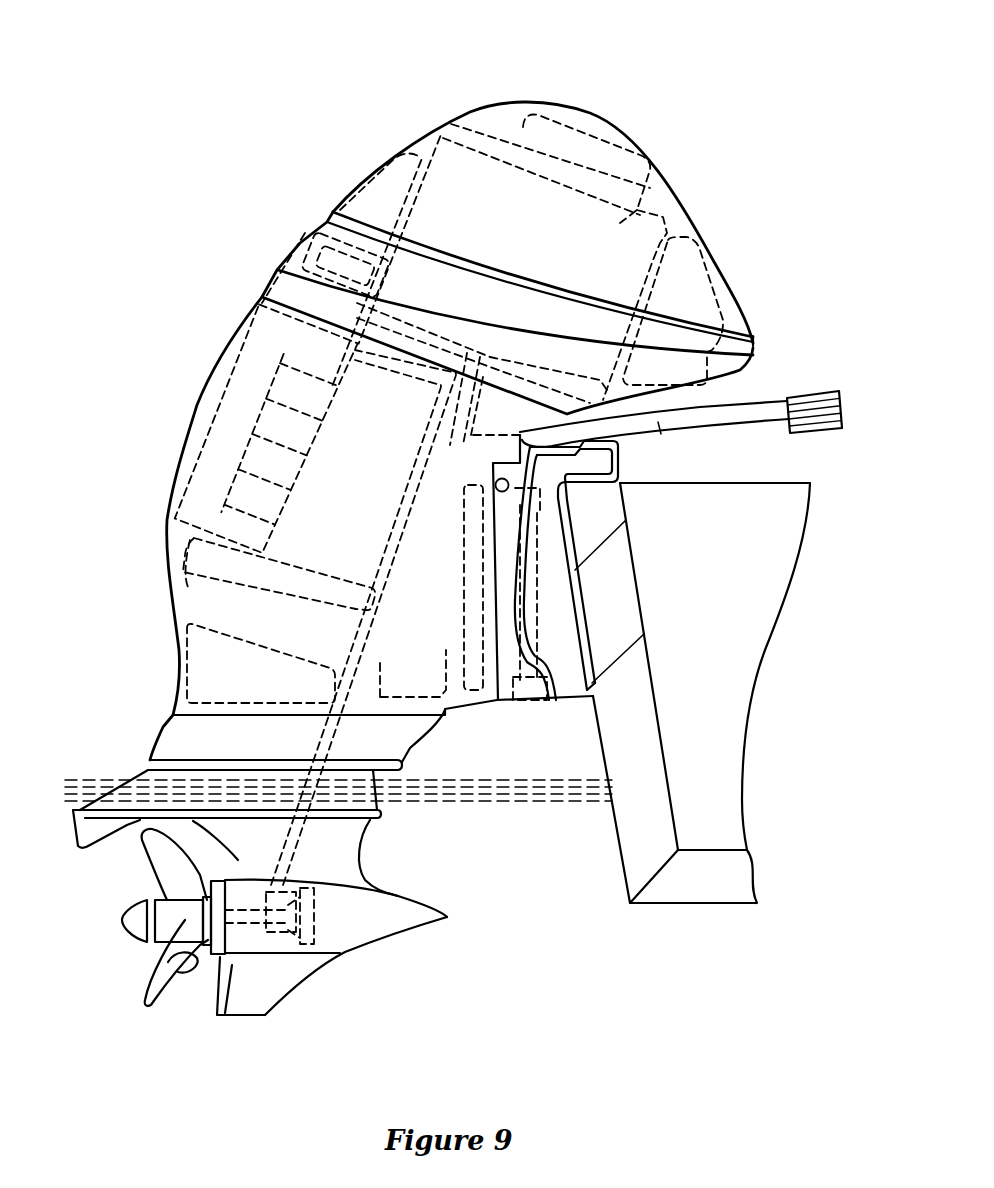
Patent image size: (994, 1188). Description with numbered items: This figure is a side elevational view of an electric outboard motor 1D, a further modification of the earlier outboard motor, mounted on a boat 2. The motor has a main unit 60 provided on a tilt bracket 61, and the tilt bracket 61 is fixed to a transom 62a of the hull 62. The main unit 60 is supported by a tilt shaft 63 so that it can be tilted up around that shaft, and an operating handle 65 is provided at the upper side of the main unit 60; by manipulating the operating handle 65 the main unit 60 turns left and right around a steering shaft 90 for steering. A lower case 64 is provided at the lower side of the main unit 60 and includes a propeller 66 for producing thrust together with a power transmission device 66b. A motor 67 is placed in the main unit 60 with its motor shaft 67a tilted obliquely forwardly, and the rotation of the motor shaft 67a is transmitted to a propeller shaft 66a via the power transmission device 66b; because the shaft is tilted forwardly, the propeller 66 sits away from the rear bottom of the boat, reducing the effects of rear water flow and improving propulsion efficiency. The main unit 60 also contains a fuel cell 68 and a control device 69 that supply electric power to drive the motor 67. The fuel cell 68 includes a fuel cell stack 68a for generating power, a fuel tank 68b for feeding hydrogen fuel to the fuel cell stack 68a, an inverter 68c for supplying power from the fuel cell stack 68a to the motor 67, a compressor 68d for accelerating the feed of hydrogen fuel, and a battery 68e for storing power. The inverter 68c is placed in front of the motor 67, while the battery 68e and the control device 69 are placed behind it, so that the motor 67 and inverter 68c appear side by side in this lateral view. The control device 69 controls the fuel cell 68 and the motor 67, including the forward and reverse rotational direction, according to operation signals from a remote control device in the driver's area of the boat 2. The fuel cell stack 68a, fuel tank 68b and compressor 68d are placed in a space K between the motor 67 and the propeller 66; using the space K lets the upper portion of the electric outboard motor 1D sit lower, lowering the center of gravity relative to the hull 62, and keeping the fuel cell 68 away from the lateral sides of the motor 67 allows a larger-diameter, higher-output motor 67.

The electric outboard motor 1D is at (493, 68).
The main unit 60 is at (188, 375).
The battery 68e is at (380, 200).
The motor 67 is at (628, 216).
The inverter 68c is at (703, 263).
The control device 69 is at (300, 270).
The fuel cell stack 68a is at (256, 373).
The compressor 68d is at (270, 427).
The space K is at (197, 435).
The fuel cell 68 is at (160, 628).
The fuel tank 68b is at (455, 690).
The motor shaft 67a is at (378, 668).
The operating handle 65 is at (752, 420).
The boat 2 is at (748, 478).
The tilt shaft 63 is at (510, 485).
The steering shaft 90 is at (540, 523).
The transom 62a is at (625, 596).
The hull 62 is at (657, 918).
The tilt bracket 61 is at (547, 650).
The lower case 64 is at (358, 871).
The propeller 66 is at (143, 1007).
The propeller shaft 66a is at (247, 925).
The power transmission device 66b is at (319, 930).